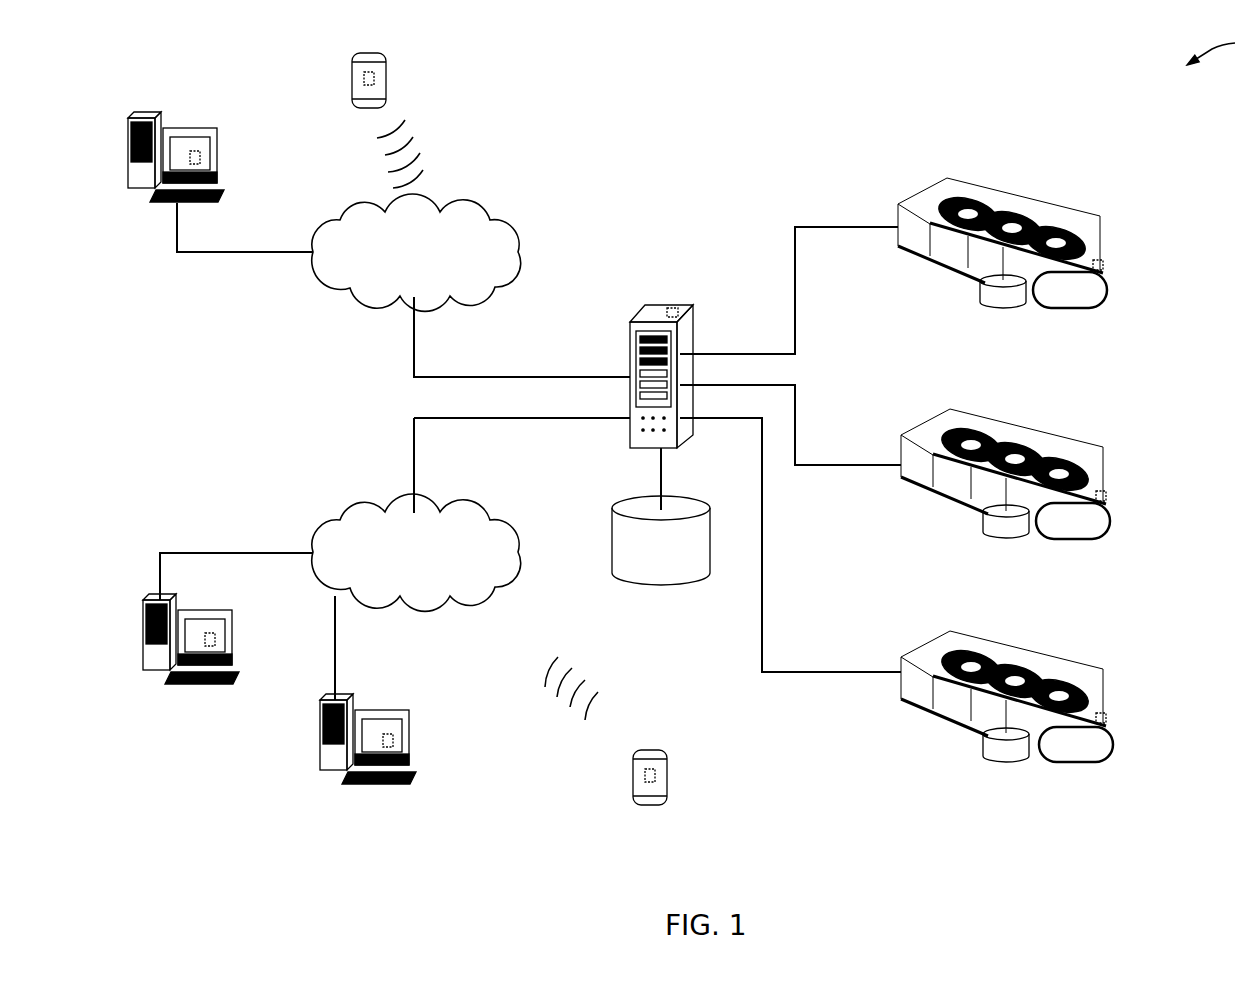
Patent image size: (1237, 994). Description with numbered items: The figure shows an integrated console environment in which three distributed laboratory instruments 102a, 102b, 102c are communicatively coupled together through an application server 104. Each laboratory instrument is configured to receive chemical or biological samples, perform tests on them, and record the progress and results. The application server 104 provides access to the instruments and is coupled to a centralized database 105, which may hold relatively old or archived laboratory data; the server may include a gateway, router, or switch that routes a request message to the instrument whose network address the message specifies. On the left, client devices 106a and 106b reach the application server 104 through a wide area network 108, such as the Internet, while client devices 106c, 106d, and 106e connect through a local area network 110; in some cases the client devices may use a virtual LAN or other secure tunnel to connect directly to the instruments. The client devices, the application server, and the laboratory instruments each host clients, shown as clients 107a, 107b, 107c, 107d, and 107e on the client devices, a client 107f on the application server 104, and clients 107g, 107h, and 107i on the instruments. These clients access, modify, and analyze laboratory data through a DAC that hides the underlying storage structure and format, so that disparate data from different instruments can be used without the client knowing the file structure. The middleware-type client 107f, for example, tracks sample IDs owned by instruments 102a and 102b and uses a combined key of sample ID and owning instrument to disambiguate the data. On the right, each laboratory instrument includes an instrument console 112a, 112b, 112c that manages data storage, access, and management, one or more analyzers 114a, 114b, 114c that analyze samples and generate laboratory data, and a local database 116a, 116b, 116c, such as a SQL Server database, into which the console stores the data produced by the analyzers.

The laboratory instrument 102a is at (1033, 214).
The laboratory instrument 102b is at (1037, 447).
The laboratory instrument 102c is at (1036, 669).
The application server 104 is at (630, 322).
The centralized database 105 is at (644, 556).
The client device 106a is at (377, 53).
The client device 106b is at (145, 113).
The client device 106c is at (170, 690).
The client device 106d is at (407, 708).
The client device 106e is at (638, 750).
The client 107a is at (357, 74).
The client 107b is at (220, 163).
The client 107c is at (226, 618).
The client 107d is at (412, 746).
The client 107e is at (630, 770).
The client 107f is at (680, 302).
The client 107g is at (1112, 268).
The client 107h is at (1114, 493).
The client 107i is at (1114, 715).
The wide area network 108 is at (480, 213).
The local area network 110 is at (465, 515).
The instrument console 112a is at (1048, 302).
The instrument console 112b is at (1051, 533).
The instrument console 112c is at (1054, 756).
The analyzer 114a is at (995, 205).
The analyzer 114b is at (1015, 438).
The analyzer 114c is at (1016, 660).
The local database 116a is at (978, 290).
The local database 116b is at (981, 520).
The local database 116c is at (981, 745).